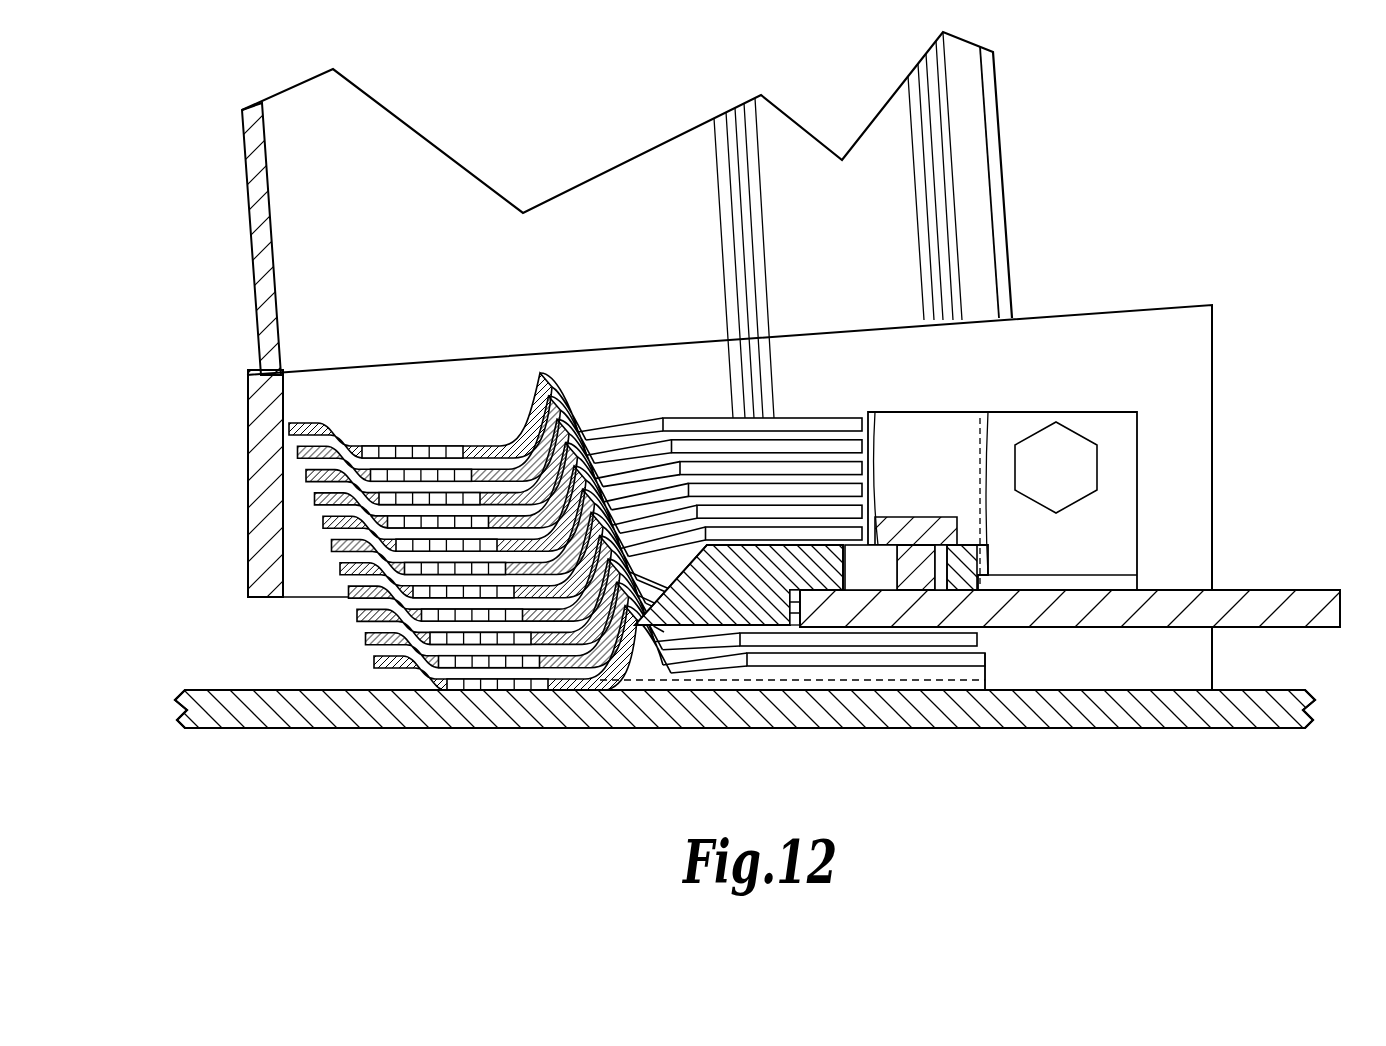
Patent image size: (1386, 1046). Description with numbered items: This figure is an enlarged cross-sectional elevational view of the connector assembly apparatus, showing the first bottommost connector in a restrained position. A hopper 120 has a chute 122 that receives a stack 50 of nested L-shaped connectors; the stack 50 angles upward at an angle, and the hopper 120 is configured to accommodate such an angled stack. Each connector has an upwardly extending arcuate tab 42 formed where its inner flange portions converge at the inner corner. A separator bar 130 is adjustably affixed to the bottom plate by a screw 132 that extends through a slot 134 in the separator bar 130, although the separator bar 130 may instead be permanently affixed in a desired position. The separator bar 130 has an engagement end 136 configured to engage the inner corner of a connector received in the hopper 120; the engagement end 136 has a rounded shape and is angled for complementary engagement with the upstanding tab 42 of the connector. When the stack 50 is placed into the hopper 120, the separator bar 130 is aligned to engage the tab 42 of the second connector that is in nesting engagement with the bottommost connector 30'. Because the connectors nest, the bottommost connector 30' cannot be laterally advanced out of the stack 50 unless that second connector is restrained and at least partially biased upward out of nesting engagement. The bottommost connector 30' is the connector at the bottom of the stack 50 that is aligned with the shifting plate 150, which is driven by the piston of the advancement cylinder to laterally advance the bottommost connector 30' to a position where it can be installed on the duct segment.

The hopper 120 is at (238, 258).
The chute 122 is at (570, 281).
The stack 50 is at (362, 680).
The engagement end 136 is at (677, 565).
The arcuate tab 42 is at (643, 655).
The separator bar 130 is at (708, 607).
The screw 132 is at (917, 532).
The slot 134 is at (847, 563).
The first bottommost connector 30' is at (1023, 721).
The shifting plate 150 is at (367, 718).